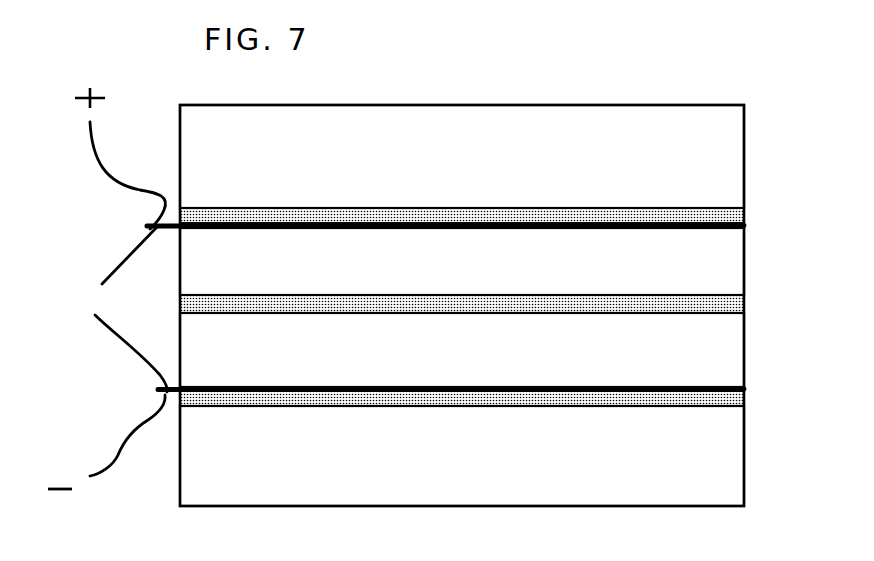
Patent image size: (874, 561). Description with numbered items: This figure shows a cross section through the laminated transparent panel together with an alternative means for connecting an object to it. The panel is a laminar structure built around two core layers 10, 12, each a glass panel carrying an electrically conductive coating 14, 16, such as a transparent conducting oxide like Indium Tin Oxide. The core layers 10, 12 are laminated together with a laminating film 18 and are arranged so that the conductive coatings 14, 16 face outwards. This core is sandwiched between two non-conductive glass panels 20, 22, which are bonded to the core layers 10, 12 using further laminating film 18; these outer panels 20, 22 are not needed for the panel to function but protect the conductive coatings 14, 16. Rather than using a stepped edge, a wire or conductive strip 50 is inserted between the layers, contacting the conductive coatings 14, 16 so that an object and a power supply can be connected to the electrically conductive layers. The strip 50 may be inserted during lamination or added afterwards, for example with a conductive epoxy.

The core layer 10 is at (715, 276).
The core layer 12 is at (722, 358).
The electrically conductive coating 14 is at (744, 227).
The electrically conductive coating 16 is at (744, 389).
The laminating film 18 is at (725, 218).
The non-conductive glass panel 20 is at (715, 168).
The non-conductive glass panel 22 is at (712, 458).
The conductive strip 50 is at (107, 288).